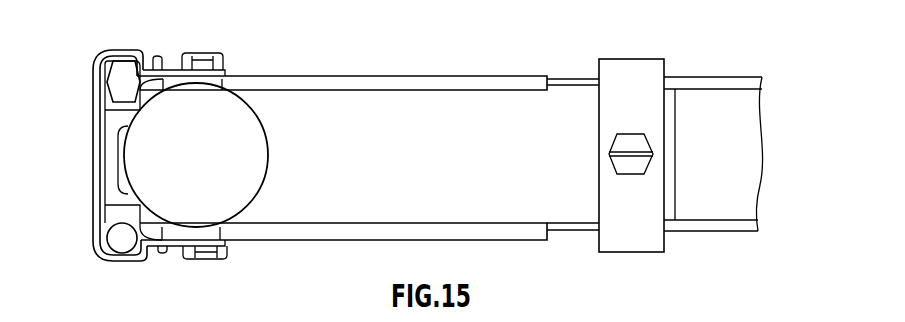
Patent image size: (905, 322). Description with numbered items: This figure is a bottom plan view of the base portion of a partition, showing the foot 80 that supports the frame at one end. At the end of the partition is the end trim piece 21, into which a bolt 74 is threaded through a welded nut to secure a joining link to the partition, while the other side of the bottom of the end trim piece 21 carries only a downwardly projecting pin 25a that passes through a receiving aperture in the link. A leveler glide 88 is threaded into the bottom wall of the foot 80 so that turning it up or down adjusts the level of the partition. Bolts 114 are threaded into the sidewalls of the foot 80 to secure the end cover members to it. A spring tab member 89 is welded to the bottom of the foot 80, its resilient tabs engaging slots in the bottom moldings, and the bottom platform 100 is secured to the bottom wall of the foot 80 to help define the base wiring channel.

The end trim piece 21 is at (92, 127).
The downwardly projecting pin 25a is at (117, 237).
The bolt 74 is at (126, 72).
The foot 80 is at (445, 128).
The leveler glide 88 is at (200, 163).
The spring tab member 89 is at (647, 88).
The bottom platform 100 is at (740, 113).
The bolt 114 is at (205, 55).